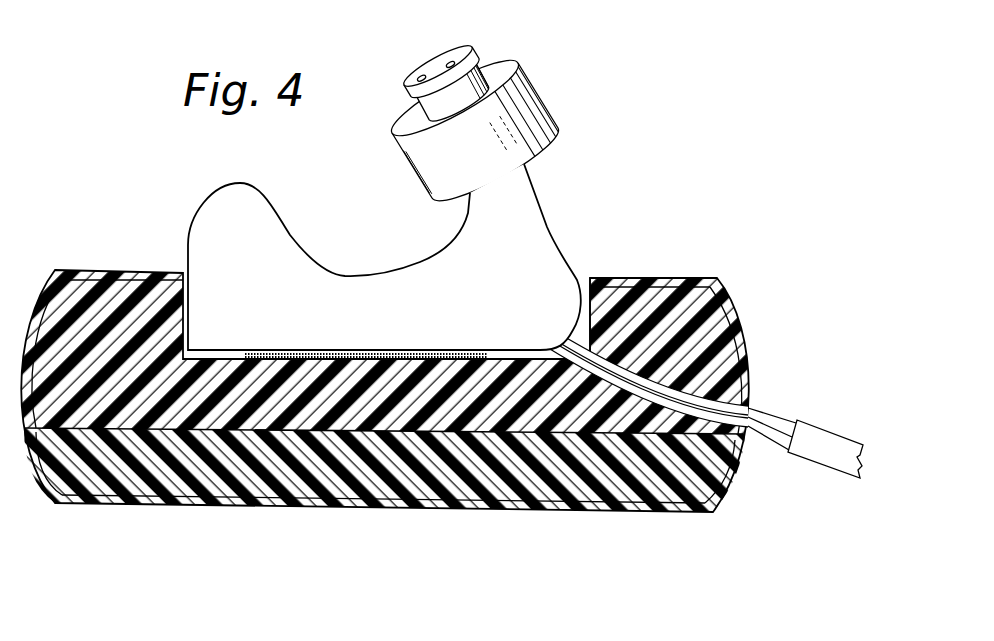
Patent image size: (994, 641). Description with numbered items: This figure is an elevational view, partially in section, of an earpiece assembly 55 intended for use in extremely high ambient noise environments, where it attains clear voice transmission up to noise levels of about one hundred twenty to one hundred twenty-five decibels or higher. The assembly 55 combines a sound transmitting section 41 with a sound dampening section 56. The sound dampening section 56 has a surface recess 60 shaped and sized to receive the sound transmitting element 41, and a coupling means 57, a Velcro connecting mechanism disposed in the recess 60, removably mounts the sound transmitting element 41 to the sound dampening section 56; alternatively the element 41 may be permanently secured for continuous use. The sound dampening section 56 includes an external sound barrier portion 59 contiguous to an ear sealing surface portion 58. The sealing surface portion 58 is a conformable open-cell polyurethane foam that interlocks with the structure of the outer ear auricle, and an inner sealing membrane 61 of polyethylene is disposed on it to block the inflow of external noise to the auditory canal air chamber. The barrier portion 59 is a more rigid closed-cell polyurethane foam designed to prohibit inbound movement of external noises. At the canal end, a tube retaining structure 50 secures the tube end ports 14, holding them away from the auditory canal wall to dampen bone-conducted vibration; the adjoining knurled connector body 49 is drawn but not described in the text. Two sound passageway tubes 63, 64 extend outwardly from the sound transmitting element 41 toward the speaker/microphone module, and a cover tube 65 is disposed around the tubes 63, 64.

The end ports 14 is at (424, 72).
The tube retaining structure 50 is at (476, 34).
The knurled connector body 49 is at (527, 98).
The sound transmitting section 41 is at (292, 233).
The assembly 55 is at (653, 220).
The surface recess 60 is at (589, 277).
The inner sealing membrane 61 is at (115, 268).
The tube 63 is at (717, 305).
The ear sealing surface portion 58 is at (195, 402).
The external sound barrier portion 59 is at (459, 477).
The coupling means 57 is at (393, 359).
The sound dampening section 56 is at (751, 395).
The tube 64 is at (627, 495).
The cover tube 65 is at (820, 458).